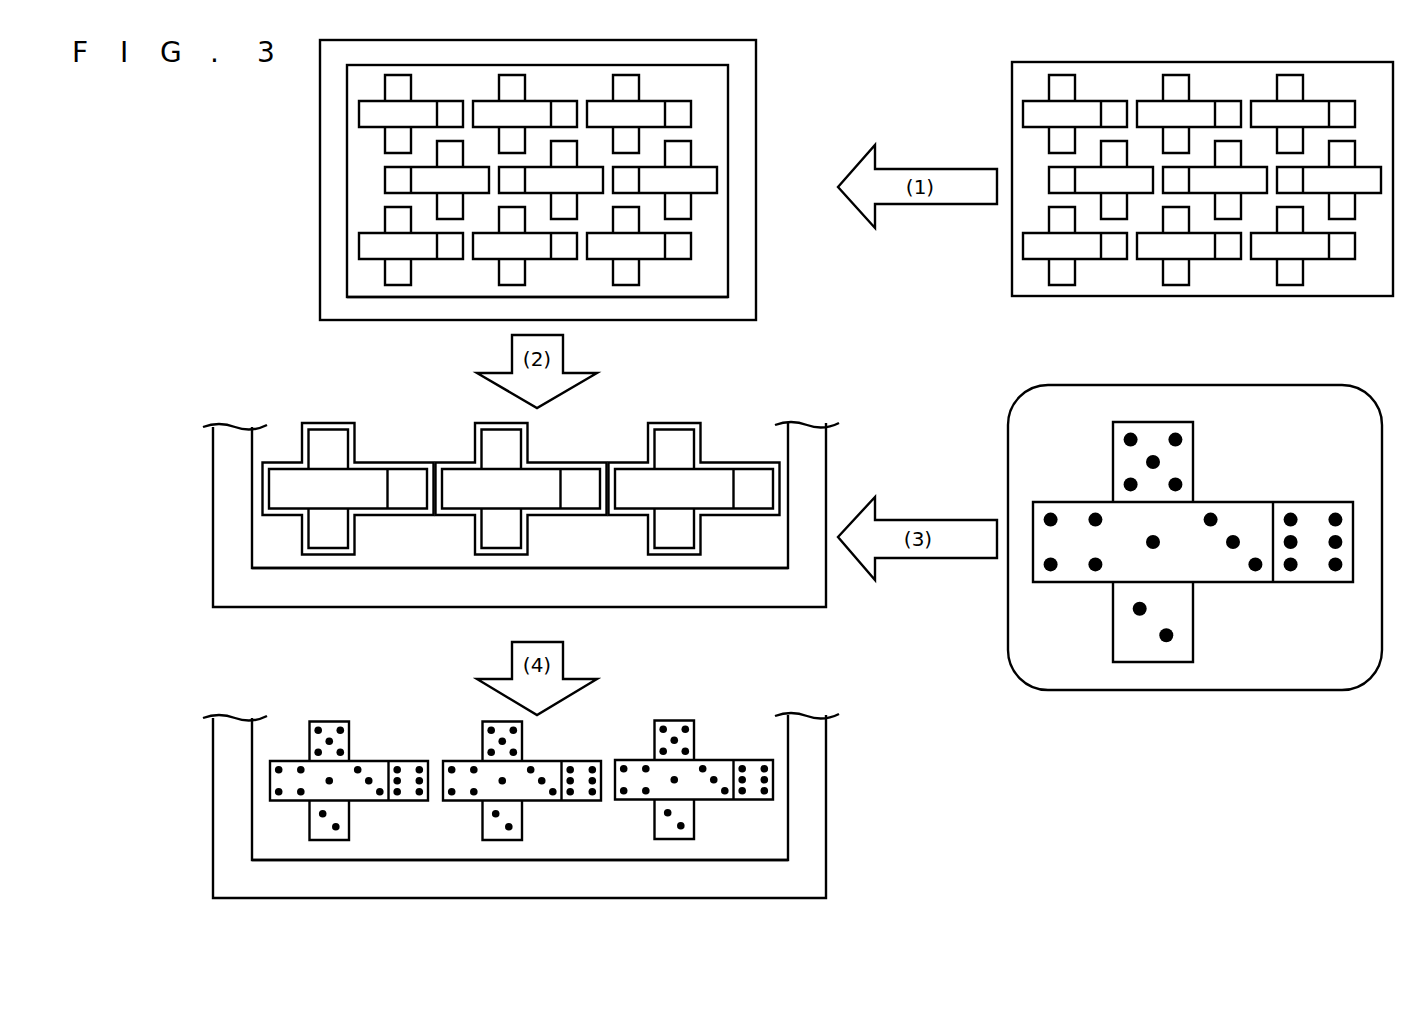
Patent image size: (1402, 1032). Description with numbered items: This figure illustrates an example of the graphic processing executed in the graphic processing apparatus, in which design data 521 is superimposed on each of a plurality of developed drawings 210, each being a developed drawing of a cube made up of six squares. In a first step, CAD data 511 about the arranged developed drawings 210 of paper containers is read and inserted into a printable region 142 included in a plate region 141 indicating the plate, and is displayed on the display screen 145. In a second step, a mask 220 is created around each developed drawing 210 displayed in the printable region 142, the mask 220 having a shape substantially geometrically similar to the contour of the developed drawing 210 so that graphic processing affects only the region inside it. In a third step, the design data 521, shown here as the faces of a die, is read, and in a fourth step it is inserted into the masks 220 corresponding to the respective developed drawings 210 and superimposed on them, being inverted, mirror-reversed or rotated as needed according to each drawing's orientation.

The display screen 145 is at (320, 113).
The plate region 141 is at (333, 185).
The printable region 142 is at (347, 252).
The developed drawing 210 is at (691, 245).
The mask 220 is at (672, 422).
The CAD data 511 is at (1205, 298).
The design data 521 is at (1195, 690).